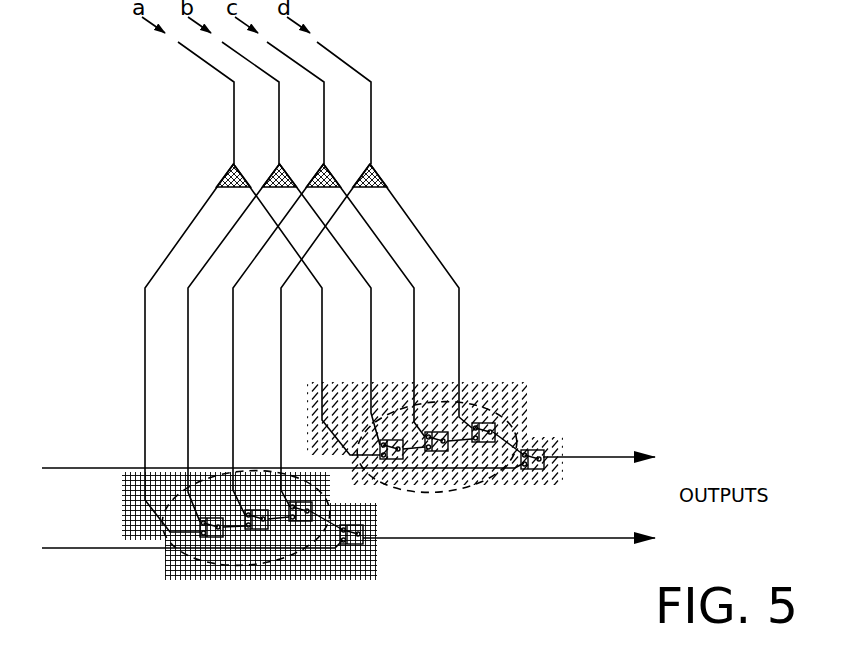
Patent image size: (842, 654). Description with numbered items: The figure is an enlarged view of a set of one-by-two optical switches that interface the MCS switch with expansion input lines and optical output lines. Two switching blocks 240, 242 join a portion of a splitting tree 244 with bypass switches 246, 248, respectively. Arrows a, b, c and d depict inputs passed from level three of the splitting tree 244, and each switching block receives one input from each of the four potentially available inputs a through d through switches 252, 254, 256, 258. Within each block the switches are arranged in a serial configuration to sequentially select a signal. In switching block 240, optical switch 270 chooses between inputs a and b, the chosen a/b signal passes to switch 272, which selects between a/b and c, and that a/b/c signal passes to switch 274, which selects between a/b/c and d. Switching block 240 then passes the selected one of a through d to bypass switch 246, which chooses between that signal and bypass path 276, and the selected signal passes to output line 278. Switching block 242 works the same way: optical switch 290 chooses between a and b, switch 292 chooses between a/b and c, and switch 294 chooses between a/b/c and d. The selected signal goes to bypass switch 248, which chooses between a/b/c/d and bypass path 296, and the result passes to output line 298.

The switching block 240 is at (357, 427).
The switching block 242 is at (220, 472).
The splitting tree 244 is at (320, 287).
The bypass switch 246 is at (538, 470).
The bypass switch 248 is at (355, 545).
The switch 252 is at (383, 180).
The switch 254 is at (326, 178).
The switch 256 is at (278, 172).
The switch 258 is at (220, 187).
The optical switch 270 is at (390, 459).
The switch 272 is at (433, 431).
The switch 274 is at (500, 430).
The bypass path 276 is at (93, 468).
The output line 278 is at (590, 457).
The optical switch 290 is at (212, 538).
The switch 292 is at (258, 529).
The switch 294 is at (312, 507).
The bypass path 296 is at (75, 549).
The output line 298 is at (535, 539).